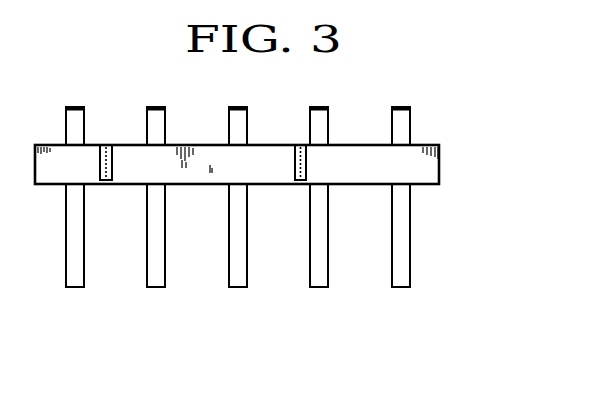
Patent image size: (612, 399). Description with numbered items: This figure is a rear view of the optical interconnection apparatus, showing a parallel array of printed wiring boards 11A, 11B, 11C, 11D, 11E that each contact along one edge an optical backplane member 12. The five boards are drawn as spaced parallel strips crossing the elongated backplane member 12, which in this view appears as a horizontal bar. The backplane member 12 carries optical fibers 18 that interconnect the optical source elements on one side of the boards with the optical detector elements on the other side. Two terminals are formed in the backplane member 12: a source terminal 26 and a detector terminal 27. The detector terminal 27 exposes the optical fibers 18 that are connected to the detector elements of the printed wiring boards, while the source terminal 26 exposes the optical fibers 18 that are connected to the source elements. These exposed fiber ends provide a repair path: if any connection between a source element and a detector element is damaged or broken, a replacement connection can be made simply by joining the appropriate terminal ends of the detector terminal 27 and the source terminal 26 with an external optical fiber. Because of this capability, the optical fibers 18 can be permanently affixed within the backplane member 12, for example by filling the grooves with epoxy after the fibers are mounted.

The optical backplane member 12 is at (440, 168).
The printed wiring board 11A is at (72, 280).
The printed wiring board 11B is at (158, 278).
The printed wiring board 11C is at (237, 278).
The printed wiring board 11D is at (322, 278).
The printed wiring board 11E is at (397, 278).
The optical fibers 18 is at (113, 146).
The source terminal 26 is at (295, 150).
The detector terminal 27 is at (113, 173).